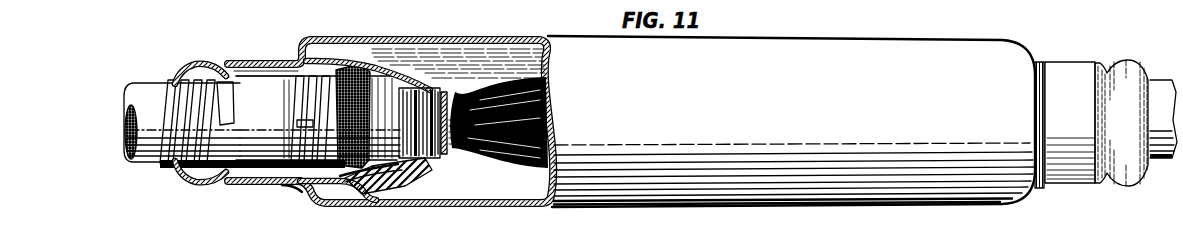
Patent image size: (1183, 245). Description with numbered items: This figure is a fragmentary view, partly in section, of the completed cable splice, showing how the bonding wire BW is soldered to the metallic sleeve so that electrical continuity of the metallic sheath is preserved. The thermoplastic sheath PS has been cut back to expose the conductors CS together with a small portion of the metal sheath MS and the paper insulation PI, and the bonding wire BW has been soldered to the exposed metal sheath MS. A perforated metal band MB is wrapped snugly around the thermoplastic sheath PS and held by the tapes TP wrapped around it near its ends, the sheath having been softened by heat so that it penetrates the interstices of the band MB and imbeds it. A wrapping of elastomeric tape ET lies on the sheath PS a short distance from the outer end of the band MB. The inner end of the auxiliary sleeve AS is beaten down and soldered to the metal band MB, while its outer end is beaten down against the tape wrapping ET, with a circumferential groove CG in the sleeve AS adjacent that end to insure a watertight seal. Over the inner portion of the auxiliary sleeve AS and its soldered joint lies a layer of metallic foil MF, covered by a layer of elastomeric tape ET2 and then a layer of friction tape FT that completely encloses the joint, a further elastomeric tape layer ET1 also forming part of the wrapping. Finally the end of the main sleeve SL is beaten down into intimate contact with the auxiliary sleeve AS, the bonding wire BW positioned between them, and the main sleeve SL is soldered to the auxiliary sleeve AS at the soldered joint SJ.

The thermoplastic sheath PS is at (152, 88).
The elastomeric tape ET is at (196, 88).
The circumferential groove CG is at (220, 70).
The auxiliary sleeve AS is at (270, 62).
The tape TP is at (376, 88).
The bonding wire BW is at (414, 92).
The perforated metal band MB is at (335, 100).
The elastomeric tape ET1 is at (310, 118).
The soldered joint SJ is at (288, 191).
The friction tape FT is at (370, 178).
The metallic foil MF is at (382, 172).
The elastomeric tape ET2 is at (382, 170).
The metal sheath MS is at (432, 158).
The paper insulation PI is at (447, 148).
The conductors CS is at (519, 152).
The main sleeve SL is at (890, 190).